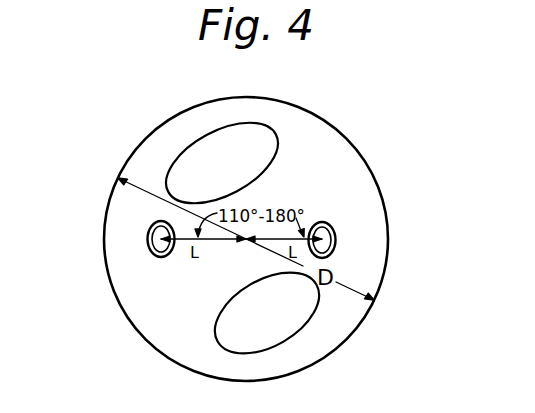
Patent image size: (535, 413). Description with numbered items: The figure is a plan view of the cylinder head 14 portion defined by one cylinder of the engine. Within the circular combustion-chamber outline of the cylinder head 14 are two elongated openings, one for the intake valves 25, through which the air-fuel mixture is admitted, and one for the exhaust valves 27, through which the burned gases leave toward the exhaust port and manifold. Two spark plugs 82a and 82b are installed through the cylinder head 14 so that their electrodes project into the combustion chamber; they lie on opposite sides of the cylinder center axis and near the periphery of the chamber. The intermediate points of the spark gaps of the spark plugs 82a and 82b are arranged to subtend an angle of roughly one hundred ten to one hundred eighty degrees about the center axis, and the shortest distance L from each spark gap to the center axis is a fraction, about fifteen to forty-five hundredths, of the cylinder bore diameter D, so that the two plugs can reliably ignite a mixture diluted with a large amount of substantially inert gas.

The cylinder head 14 is at (350, 172).
The intake valves 25 is at (187, 160).
The exhaust valves 27 is at (288, 323).
The spark plug 82a is at (150, 241).
The spark plug 82b is at (337, 245).